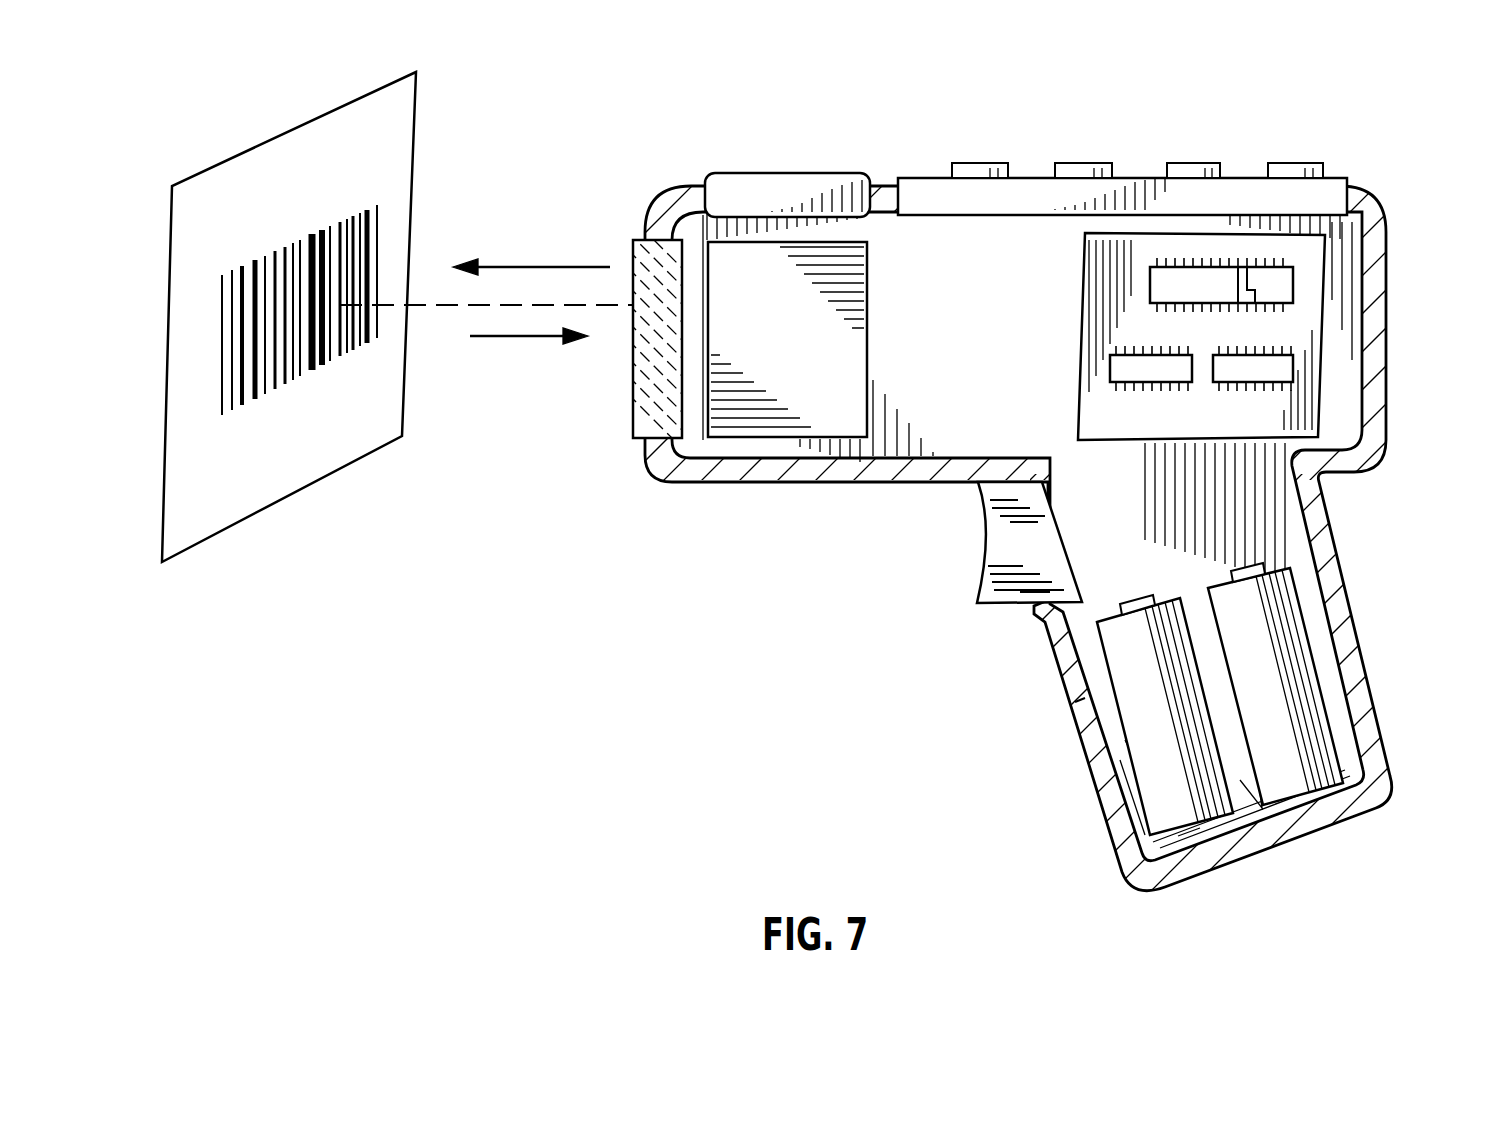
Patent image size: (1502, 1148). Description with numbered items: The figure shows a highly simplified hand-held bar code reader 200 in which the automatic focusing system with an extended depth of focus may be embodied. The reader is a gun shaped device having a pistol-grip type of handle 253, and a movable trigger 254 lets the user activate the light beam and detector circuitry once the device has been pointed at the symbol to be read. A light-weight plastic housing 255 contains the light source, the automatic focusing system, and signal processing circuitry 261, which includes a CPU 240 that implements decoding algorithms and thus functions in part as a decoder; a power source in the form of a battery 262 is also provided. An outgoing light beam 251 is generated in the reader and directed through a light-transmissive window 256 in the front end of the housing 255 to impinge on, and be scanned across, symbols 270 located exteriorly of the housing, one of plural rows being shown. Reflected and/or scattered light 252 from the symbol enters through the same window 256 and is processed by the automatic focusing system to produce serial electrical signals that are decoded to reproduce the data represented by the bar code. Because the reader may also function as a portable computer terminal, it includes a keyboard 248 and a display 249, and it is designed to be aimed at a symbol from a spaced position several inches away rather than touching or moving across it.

The reader 200 is at (926, 497).
The CPU 240 is at (1187, 273).
The keyboard 248 is at (1235, 187).
The display 249 is at (805, 193).
The outgoing light beam 251 is at (531, 262).
The reflected light 252 is at (524, 341).
The handle 253 is at (1074, 706).
The trigger 254 is at (998, 530).
The housing 255 is at (1387, 368).
The light-transmissive window 256 is at (646, 408).
The signal processing circuitry 261 is at (1279, 277).
The battery 262 is at (1287, 688).
The symbols 270 is at (372, 251).